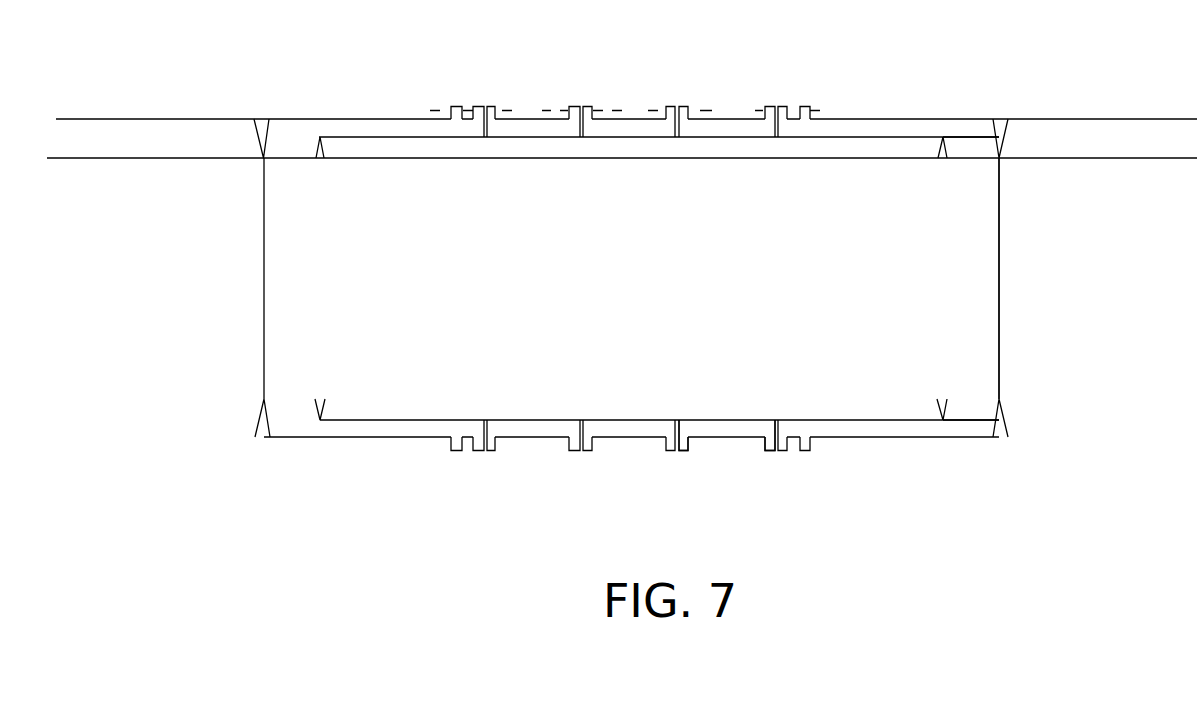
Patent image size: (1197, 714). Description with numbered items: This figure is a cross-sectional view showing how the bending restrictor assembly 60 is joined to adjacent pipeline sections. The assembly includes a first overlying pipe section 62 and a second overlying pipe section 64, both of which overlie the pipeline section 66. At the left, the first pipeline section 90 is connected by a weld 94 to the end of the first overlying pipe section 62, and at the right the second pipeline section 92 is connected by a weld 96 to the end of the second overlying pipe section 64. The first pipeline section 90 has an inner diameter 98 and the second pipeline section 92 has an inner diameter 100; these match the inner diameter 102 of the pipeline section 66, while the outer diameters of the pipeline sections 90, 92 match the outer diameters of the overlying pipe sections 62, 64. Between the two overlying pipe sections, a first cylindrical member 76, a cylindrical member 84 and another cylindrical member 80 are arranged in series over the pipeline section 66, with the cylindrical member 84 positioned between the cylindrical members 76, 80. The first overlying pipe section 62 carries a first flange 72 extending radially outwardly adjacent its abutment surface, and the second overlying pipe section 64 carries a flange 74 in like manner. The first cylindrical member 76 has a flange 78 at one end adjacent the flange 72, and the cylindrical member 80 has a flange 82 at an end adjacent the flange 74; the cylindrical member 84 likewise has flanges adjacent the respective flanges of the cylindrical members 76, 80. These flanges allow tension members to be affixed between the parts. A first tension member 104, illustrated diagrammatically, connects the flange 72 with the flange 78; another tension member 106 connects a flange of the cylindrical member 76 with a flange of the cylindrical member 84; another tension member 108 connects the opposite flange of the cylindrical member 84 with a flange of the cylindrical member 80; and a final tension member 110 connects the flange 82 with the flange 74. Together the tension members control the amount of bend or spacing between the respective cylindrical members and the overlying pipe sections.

The bending restrictor assembly 60 is at (921, 84).
The first overlying pipe section 62 is at (310, 130).
The second overlying pipe section 64 is at (963, 137).
The pipeline section 66 is at (849, 151).
The first flange 72 is at (477, 110).
The flange 74 is at (775, 453).
The first cylindrical member 76 is at (537, 432).
The flange 78 is at (490, 107).
The cylindrical member 80 is at (723, 428).
The flange 82 is at (765, 110).
The cylindrical member 84 is at (628, 428).
The first pipeline section 90 is at (123, 133).
The second pipeline section 92 is at (1147, 120).
The weld 94 is at (257, 120).
The weld 96 is at (997, 120).
The inner diameter 98 is at (127, 158).
The inner diameter 100 is at (1155, 160).
The inner diameter 102 is at (690, 160).
The first tension member 104 is at (505, 111).
The tension member 106 is at (600, 110).
The tension member 108 is at (697, 110).
The tension member 110 is at (815, 110).